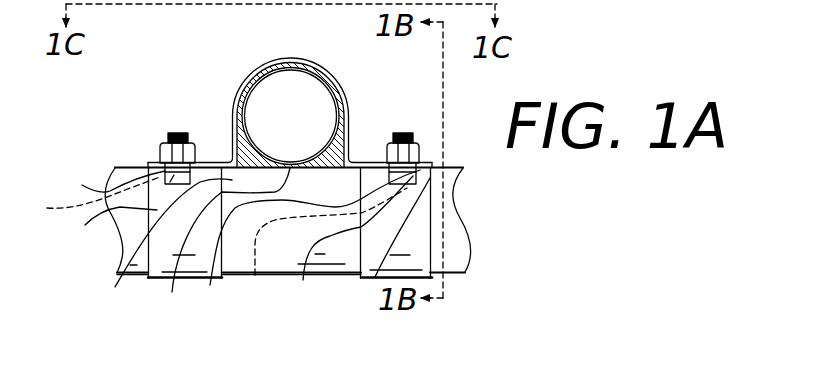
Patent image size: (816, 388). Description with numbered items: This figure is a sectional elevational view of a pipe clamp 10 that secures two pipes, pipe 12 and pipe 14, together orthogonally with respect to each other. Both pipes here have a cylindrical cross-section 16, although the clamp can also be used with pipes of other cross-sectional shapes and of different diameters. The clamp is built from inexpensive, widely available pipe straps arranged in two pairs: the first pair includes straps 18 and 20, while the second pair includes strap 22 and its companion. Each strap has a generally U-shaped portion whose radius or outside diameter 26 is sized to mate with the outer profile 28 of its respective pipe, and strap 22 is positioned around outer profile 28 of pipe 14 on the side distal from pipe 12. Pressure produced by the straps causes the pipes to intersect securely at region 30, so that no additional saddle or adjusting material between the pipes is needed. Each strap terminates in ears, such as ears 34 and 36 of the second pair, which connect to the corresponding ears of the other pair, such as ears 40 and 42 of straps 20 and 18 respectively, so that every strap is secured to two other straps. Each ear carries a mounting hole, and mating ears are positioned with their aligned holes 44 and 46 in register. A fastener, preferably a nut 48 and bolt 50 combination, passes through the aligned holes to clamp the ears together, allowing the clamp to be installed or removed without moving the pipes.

The pipe clamp 10 is at (183, 97).
The pipe 12 is at (161, 248).
The pipe 14 is at (236, 86).
The cylindrical cross-section 16 is at (303, 92).
The strap 18 is at (110, 238).
The strap 20 is at (377, 276).
The strap 22 is at (349, 132).
The outside diameter 26 is at (334, 72).
The outer profile 28 is at (277, 62).
The region 30 is at (211, 247).
The ear 34 is at (147, 163).
The ear 36 is at (373, 273).
The ear 40 is at (345, 248).
The ear 42 is at (102, 181).
The aligned hole 44 is at (80, 201).
The aligned hole 46 is at (255, 276).
The nut 48 is at (163, 147).
The bolt 50 is at (230, 245).